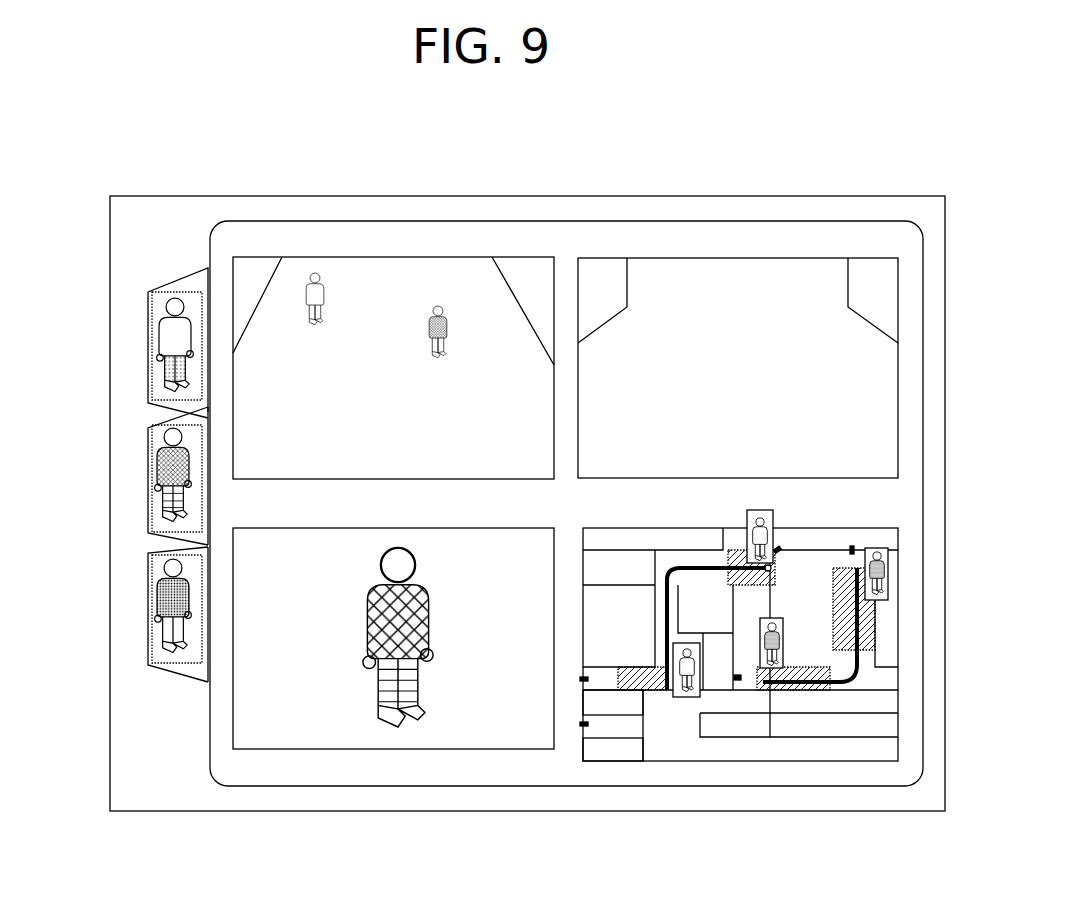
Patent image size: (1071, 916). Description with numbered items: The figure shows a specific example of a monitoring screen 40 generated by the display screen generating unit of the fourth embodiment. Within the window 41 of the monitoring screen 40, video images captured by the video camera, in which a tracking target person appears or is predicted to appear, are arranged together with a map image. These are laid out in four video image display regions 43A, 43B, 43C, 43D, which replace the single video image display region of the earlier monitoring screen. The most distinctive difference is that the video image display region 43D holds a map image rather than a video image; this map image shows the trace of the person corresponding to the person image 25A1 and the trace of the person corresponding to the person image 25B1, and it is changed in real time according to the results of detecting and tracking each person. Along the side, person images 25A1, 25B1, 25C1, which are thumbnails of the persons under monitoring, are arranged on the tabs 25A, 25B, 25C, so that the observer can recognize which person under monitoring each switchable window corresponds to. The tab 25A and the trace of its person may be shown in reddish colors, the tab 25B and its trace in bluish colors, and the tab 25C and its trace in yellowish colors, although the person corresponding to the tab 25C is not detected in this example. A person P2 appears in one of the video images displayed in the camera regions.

The monitoring screen 40 is at (205, 196).
The window 41 is at (275, 221).
The video image display region 43A is at (392, 257).
The video image display region 43B is at (735, 258).
The video image display region 43C is at (392, 749).
The video image display region 43D is at (706, 761).
The tab 25A is at (148, 352).
The person image 25A1 is at (148, 323).
The tab 25B is at (148, 487).
The person image 25B1 is at (148, 460).
The tab 25C is at (148, 620).
The person image 25C1 is at (148, 595).
The person P2 is at (415, 723).